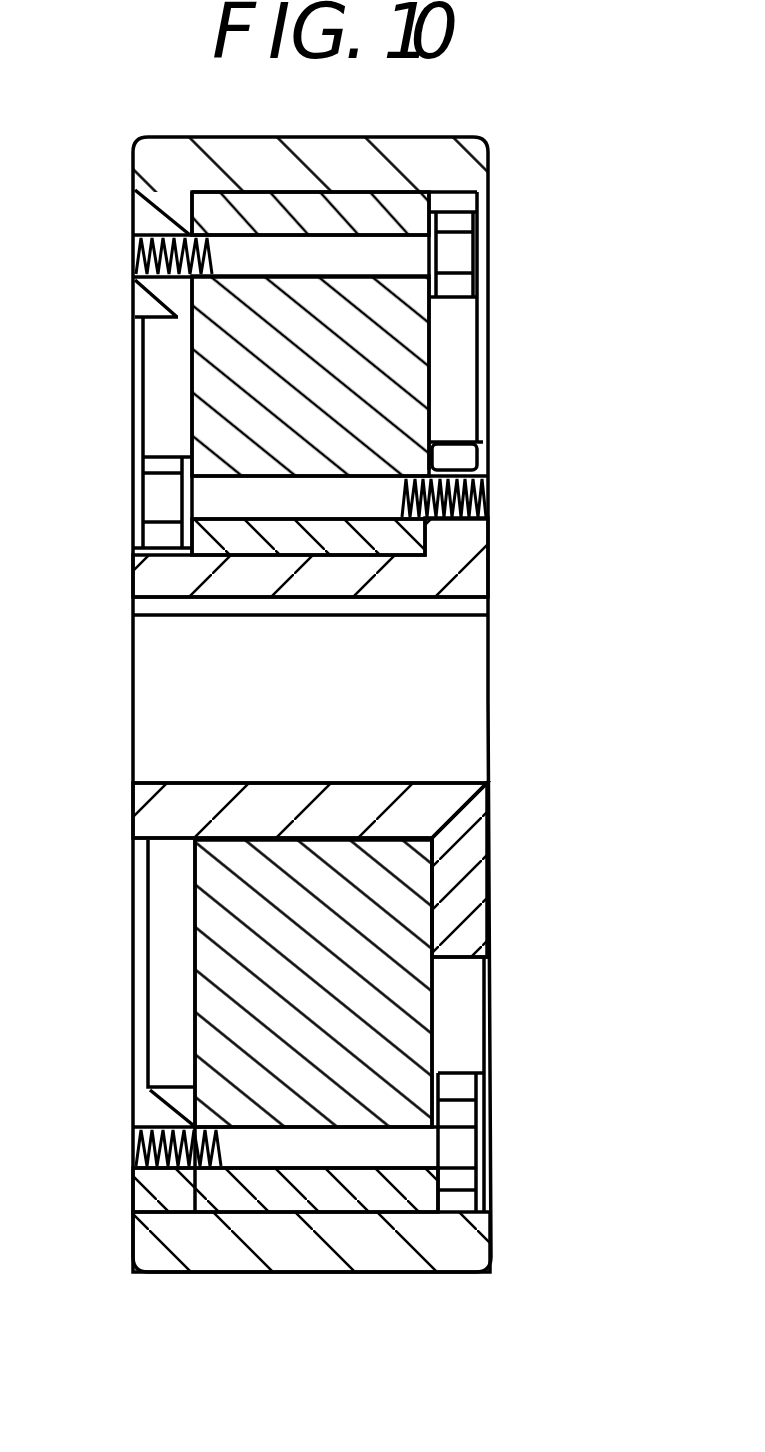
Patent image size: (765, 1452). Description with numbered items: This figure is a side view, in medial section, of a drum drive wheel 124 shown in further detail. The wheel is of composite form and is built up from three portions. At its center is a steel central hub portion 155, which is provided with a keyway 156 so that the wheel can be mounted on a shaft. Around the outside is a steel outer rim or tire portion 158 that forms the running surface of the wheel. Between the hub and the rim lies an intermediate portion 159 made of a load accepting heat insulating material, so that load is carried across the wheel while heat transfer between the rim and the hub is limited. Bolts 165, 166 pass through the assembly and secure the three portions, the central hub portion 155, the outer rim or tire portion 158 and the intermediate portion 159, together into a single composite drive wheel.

The drum drive wheel 124 is at (488, 930).
The central hub portion 155 is at (470, 792).
The keyway 156 is at (440, 612).
The outer rim or tire portion 158 is at (470, 1243).
The intermediate portion 159 is at (405, 1075).
The bolt 165 is at (463, 253).
The bolt 166 is at (165, 503).